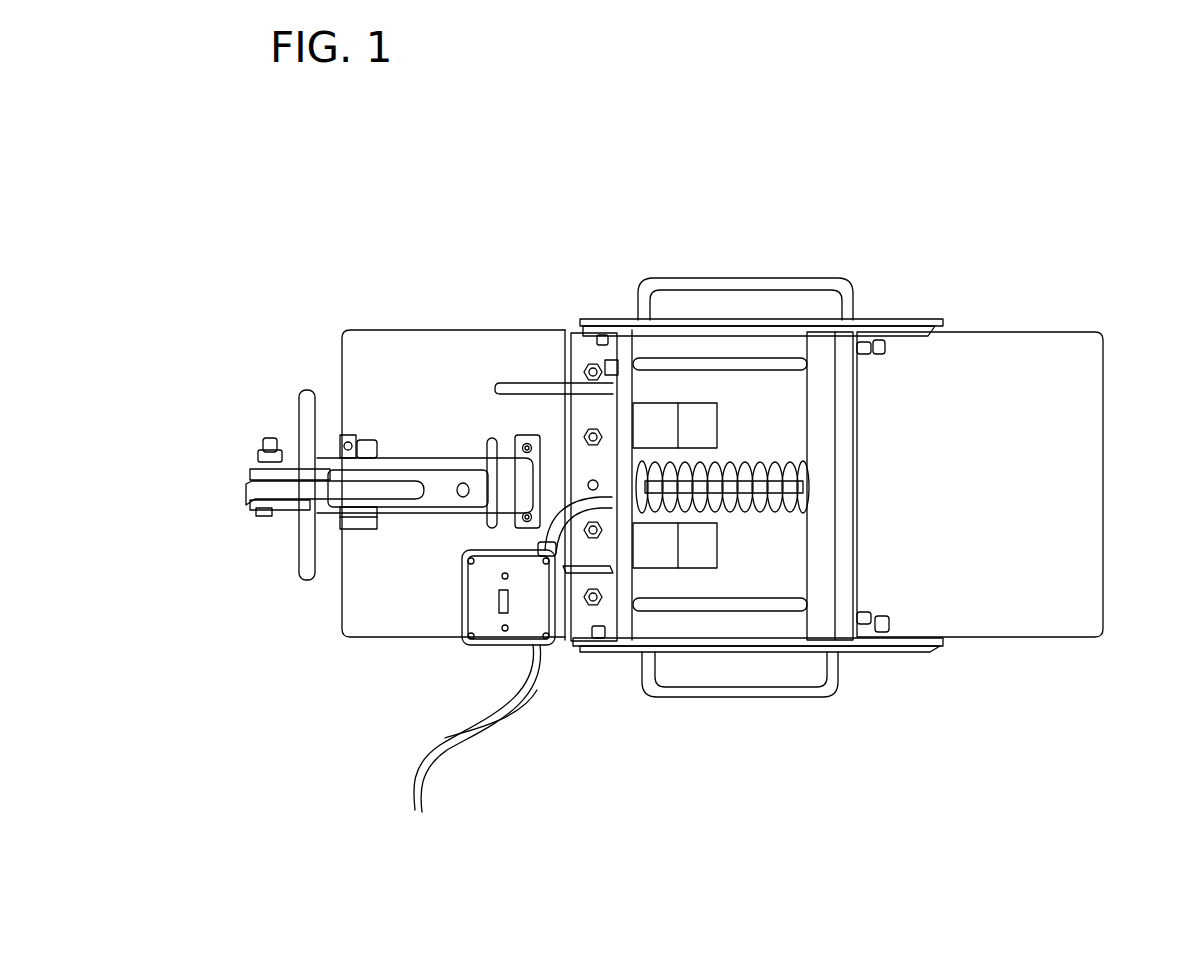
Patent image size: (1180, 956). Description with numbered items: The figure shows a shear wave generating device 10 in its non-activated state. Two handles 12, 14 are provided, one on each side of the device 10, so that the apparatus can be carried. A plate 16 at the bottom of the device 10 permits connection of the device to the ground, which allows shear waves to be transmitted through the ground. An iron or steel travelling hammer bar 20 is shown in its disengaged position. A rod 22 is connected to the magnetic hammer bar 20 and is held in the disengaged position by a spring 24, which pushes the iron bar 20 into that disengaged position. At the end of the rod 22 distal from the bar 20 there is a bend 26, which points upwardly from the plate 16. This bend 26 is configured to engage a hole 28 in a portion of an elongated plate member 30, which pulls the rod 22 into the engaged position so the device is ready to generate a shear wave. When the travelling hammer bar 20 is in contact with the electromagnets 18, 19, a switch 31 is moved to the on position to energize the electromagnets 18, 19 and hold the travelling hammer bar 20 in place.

The shear wave generating device 10 is at (947, 293).
The handle 12 is at (692, 694).
The handle 14 is at (807, 277).
The plate 16 is at (652, 636).
The electromagnet 18 is at (648, 551).
The electromagnet 19 is at (650, 420).
The travelling hammer bar 20 is at (822, 620).
The rod 22 is at (723, 492).
The spring 24 is at (699, 462).
The bend 26 is at (590, 481).
The hole 28 is at (461, 484).
The elongated plate member 30 is at (412, 482).
The switch 31 is at (495, 632).